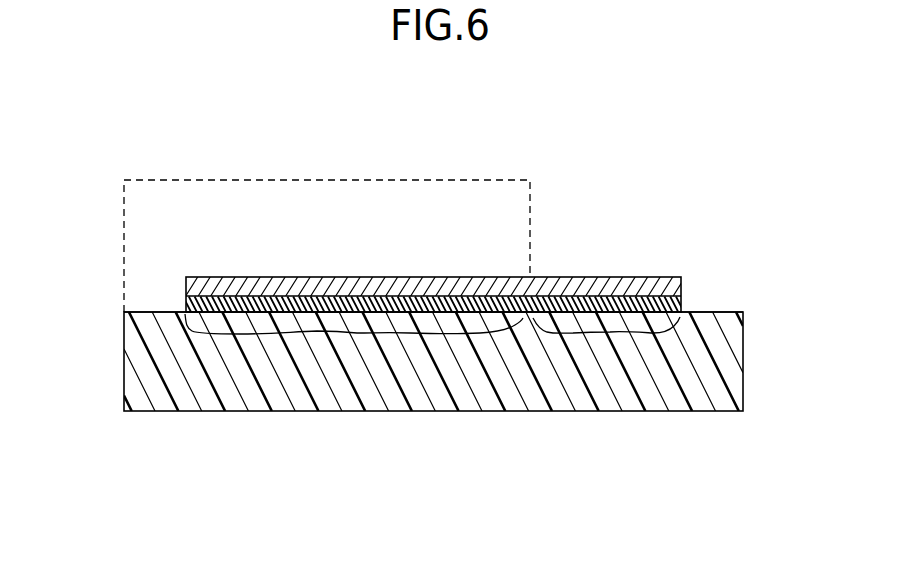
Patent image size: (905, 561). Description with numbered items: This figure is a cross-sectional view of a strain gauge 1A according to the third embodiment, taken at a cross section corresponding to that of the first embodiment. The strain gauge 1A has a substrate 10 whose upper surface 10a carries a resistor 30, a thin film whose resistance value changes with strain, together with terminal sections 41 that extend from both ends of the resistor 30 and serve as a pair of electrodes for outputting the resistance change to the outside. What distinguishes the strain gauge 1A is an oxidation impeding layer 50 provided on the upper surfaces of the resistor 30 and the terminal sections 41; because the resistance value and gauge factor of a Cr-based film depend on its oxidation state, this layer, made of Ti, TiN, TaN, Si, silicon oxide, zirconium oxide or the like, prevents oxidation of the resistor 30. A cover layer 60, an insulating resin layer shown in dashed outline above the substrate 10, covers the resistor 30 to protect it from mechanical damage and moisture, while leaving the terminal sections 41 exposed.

The strain gauge 1A is at (78, 158).
The substrate 10 is at (140, 360).
The upper surface of the substrate 10a is at (148, 312).
The resistor 30 is at (357, 333).
The terminal sections 41 is at (612, 333).
The oxidation impeding layer 50 is at (665, 283).
The cover layer 60 is at (423, 180).